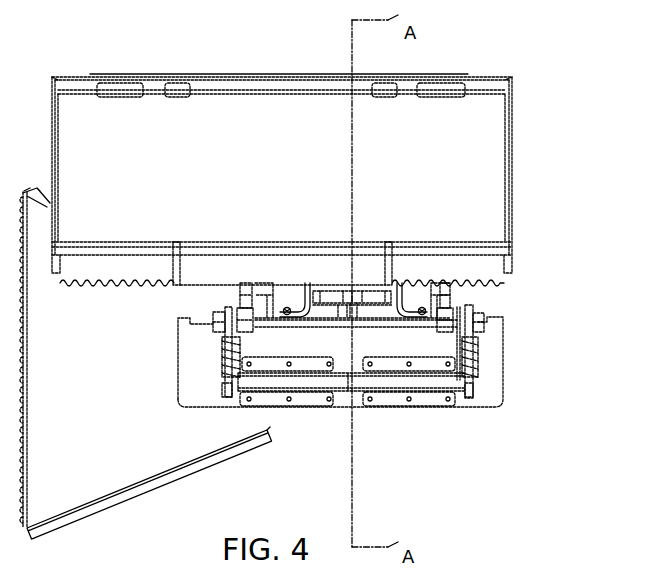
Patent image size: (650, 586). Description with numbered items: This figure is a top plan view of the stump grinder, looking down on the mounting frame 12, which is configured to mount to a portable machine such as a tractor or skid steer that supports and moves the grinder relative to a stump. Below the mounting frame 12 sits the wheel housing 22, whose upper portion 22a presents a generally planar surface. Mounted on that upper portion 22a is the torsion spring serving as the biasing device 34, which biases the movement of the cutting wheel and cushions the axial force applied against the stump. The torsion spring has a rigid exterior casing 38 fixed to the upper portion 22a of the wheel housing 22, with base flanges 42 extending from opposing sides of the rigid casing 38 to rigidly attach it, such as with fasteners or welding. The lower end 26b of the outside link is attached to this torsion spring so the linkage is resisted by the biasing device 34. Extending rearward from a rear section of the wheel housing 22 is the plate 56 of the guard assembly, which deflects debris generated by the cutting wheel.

The mounting frame 12 is at (527, 170).
The wheel housing 22 is at (356, 373).
The upper portion of the wheel housing 22a is at (253, 350).
The lower end of the outside link 26b is at (223, 387).
The biasing device 34 is at (393, 403).
The rigid exterior casing 38 is at (303, 383).
The base flanges 42 is at (419, 396).
The plate 56 is at (110, 480).